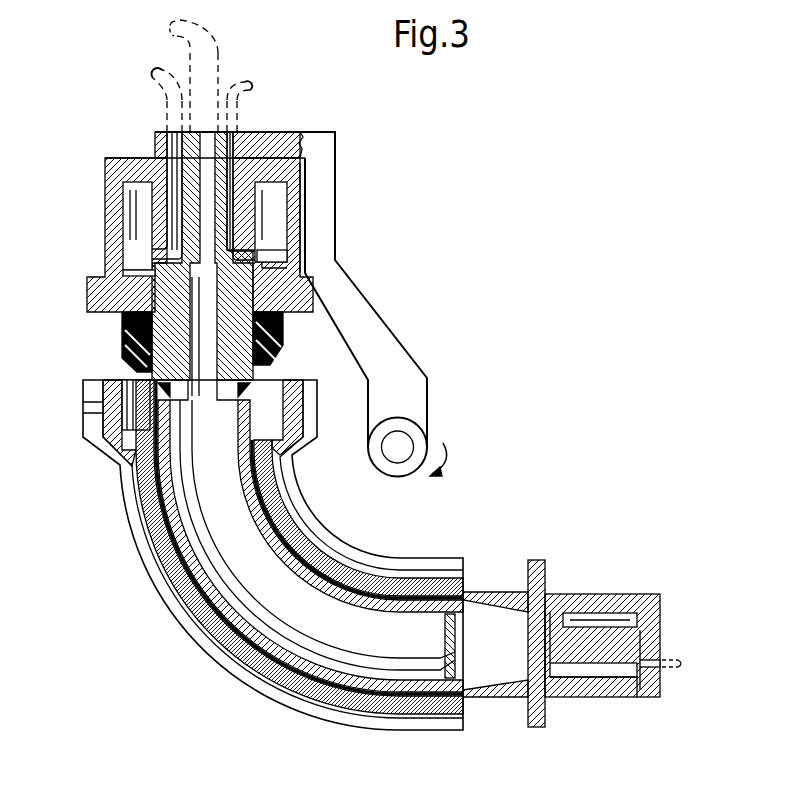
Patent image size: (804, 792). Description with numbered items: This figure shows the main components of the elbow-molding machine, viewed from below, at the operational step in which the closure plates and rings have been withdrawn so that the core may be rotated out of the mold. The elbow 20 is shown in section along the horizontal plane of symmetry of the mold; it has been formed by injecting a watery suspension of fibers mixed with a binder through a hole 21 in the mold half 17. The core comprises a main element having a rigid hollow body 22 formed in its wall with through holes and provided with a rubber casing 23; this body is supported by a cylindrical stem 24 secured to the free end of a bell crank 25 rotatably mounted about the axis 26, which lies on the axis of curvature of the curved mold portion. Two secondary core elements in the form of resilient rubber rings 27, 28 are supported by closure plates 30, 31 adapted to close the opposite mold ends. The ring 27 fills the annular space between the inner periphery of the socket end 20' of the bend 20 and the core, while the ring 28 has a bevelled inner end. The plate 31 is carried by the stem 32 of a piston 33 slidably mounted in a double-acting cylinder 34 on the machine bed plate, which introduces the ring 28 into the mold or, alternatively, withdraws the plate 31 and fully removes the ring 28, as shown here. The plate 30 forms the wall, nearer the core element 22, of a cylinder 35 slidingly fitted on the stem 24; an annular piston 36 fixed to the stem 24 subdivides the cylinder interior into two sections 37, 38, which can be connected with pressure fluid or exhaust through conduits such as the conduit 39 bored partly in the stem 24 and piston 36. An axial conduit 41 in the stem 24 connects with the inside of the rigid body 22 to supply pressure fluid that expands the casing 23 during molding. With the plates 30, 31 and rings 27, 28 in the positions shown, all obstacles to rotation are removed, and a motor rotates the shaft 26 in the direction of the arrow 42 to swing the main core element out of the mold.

The mold half 17 is at (370, 557).
The elbow 20 is at (299, 547).
The socket end 20' is at (266, 540).
The hole 21 is at (102, 438).
The rigid hollow body 22 is at (387, 683).
The rubber casing 23 is at (340, 690).
The cylindrical stem 24 is at (175, 185).
The bell crank 25 is at (325, 201).
The axis 26 is at (400, 447).
The ring 27 is at (284, 355).
The ring 28 is at (495, 592).
The closure plate 30 is at (300, 313).
The closure plate 31 is at (540, 715).
The stem 32 is at (552, 627).
The piston 33 is at (612, 595).
The double-acting cylinder 34 is at (603, 688).
The cylinder 35 is at (297, 230).
The annular piston 36 is at (280, 257).
The section 37 is at (123, 277).
The section 38 is at (278, 192).
The conduit 39 is at (162, 183).
The axial conduit 41 is at (213, 143).
The arrow 42 is at (447, 459).